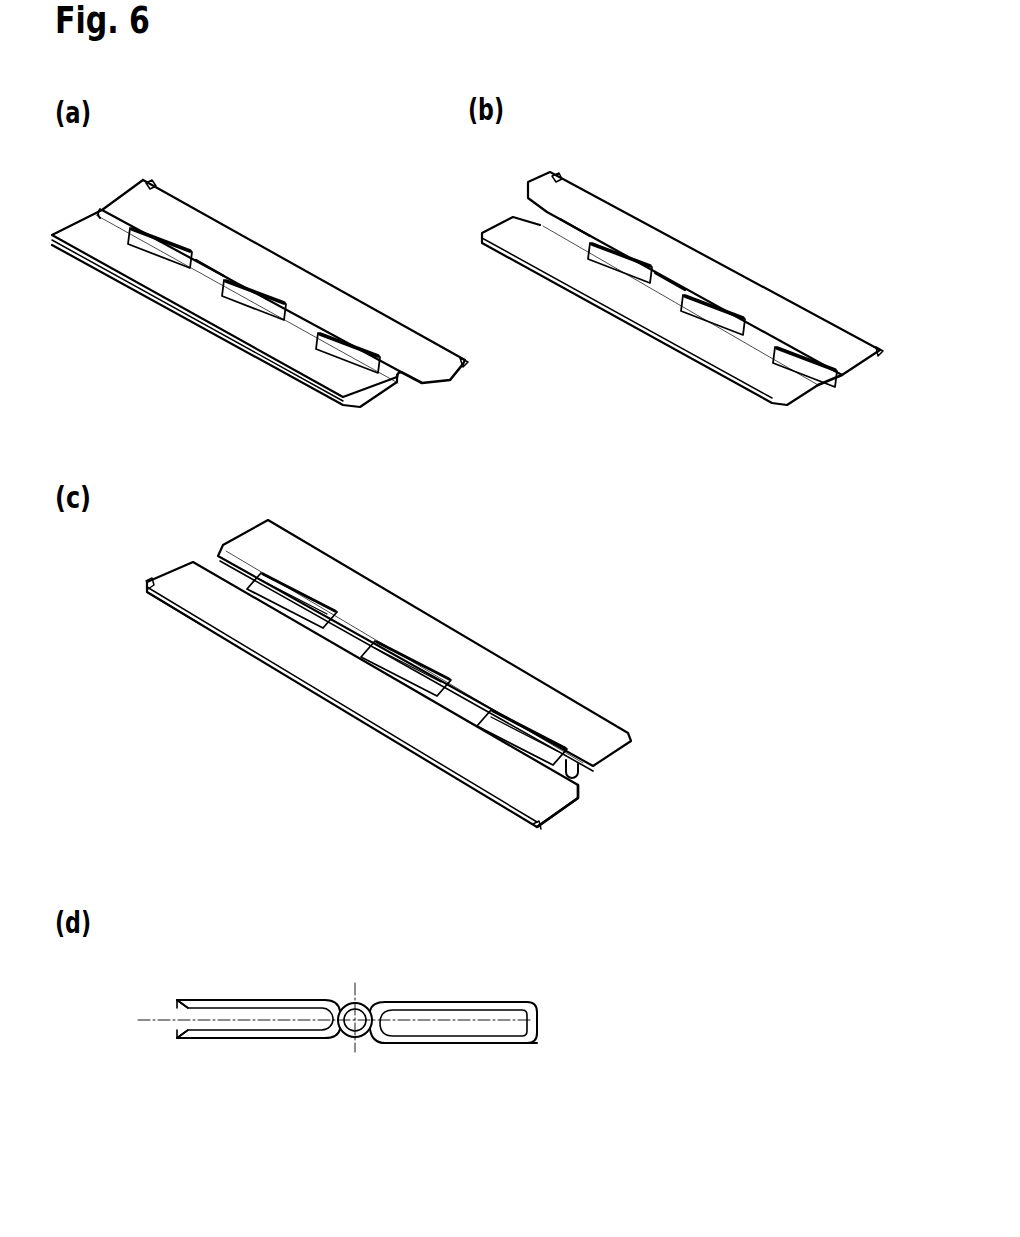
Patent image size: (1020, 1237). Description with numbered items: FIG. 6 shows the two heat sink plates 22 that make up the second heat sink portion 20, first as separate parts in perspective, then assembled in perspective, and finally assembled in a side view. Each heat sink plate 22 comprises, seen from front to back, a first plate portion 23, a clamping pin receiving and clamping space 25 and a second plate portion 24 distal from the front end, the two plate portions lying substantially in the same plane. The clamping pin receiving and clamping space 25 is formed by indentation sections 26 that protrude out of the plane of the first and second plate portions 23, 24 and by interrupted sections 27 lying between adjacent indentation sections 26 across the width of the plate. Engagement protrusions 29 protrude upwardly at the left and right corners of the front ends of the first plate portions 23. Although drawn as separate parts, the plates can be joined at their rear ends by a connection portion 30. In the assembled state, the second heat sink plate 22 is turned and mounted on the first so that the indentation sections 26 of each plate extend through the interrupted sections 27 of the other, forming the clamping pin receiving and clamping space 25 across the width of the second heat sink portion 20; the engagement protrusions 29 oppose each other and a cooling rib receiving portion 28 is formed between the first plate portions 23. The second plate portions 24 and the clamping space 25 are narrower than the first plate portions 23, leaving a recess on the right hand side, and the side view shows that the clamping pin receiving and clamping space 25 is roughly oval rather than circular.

The second heat sink portion 20 is at (270, 736).
The heat sink plate 22 is at (280, 242).
The first plate portion 23 is at (450, 381).
The second plate portion 24 is at (318, 372).
The clamping pin receiving and clamping space 25 is at (592, 799).
The indentation section 26 is at (100, 212).
The interrupted section 27 is at (158, 249).
The cooling rib receiving portion 28 is at (155, 616).
The engagement protrusion 29 is at (152, 182).
The connection portion 30 is at (537, 1033).